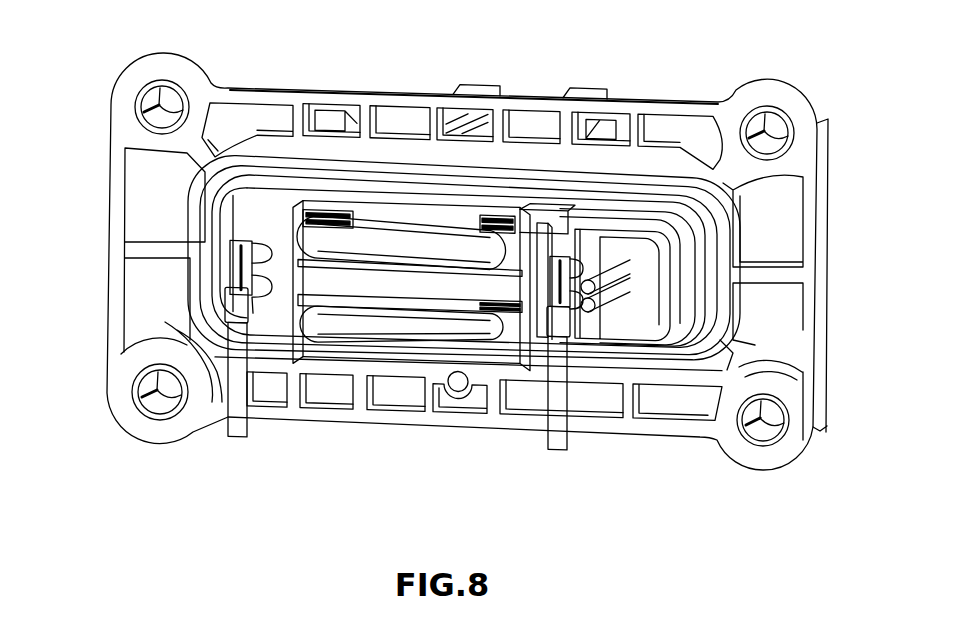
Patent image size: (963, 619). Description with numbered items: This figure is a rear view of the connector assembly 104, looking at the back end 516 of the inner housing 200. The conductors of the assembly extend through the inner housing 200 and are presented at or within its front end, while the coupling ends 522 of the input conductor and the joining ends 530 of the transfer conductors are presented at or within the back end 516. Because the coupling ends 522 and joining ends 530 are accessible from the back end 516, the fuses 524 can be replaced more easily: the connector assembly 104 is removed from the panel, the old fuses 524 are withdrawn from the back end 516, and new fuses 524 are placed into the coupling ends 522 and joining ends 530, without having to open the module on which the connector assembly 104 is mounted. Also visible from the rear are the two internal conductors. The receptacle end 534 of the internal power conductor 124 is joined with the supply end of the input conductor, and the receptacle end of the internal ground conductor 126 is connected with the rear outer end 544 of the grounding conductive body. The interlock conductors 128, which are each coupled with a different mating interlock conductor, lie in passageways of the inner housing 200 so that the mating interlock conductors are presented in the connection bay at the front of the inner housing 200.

The connector assembly 104 is at (803, 83).
The back end 516 is at (260, 208).
The joining end 530 is at (320, 222).
The coupling end 522 is at (504, 218).
The receptacle end 534 is at (560, 232).
The inner housing 200 is at (653, 300).
The interlock conductor 128 is at (617, 313).
The rear outer end 544 is at (240, 277).
The internal ground conductor 126 is at (236, 402).
The fuse 524 is at (431, 320).
The internal power conductor 124 is at (557, 403).